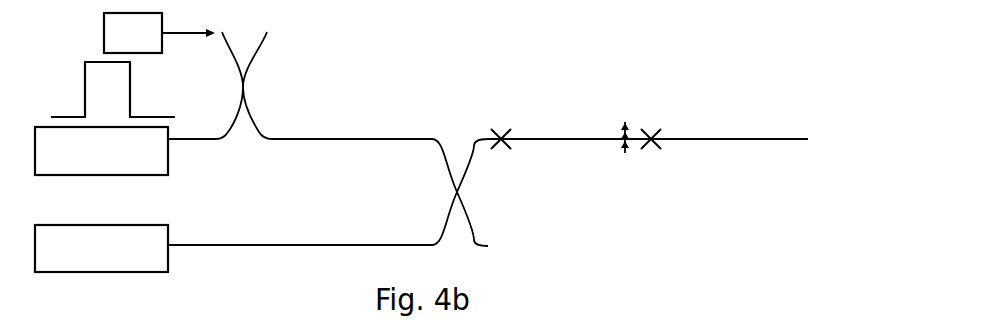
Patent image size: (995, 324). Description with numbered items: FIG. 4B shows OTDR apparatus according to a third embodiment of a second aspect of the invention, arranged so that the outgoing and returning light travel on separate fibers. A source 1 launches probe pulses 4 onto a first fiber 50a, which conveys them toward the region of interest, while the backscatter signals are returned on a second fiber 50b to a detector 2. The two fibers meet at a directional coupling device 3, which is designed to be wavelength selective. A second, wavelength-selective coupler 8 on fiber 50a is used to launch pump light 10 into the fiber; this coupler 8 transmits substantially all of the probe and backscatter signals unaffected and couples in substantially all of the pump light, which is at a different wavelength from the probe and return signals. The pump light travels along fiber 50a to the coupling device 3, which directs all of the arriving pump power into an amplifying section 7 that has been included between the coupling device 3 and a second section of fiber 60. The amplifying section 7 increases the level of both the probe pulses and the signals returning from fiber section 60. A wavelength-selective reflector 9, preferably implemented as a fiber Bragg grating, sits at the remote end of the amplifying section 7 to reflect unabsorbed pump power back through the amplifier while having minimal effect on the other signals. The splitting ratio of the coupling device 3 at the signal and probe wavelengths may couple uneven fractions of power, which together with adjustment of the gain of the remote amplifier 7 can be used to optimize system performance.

The source 1 is at (94, 166).
The detector 2 is at (94, 260).
The directional coupling device 3 is at (470, 178).
The probe pulses 4 is at (98, 98).
The amplifying section 7 is at (555, 139).
The wavelength-selective coupler 8 is at (255, 73).
The wavelength-selective reflector 9 is at (623, 143).
The pump light 10 is at (120, 44).
The first fiber 50a is at (362, 138).
The second fiber 50b is at (365, 245).
The second section of fiber 60 is at (730, 139).